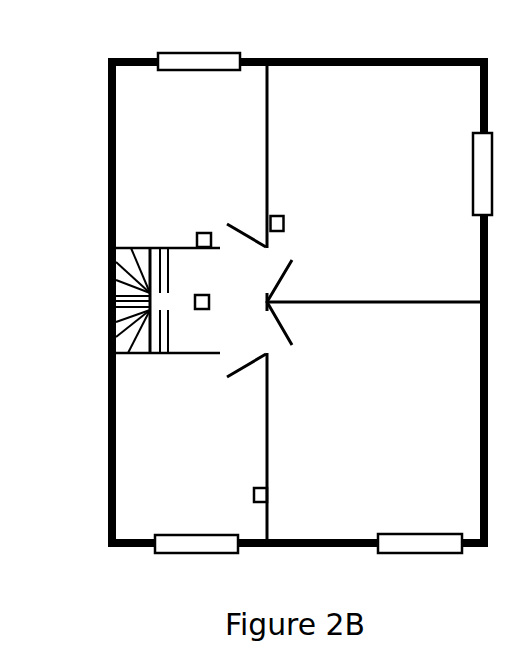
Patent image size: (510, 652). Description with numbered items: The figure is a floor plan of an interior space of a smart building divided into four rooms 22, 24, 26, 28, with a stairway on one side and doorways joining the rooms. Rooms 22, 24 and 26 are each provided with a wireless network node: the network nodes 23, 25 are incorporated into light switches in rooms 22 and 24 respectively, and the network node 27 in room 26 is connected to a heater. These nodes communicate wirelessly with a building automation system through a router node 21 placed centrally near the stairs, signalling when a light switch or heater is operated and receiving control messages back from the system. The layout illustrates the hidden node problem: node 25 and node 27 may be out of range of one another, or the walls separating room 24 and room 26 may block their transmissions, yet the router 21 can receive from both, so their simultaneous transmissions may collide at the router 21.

The router node 21 is at (190, 285).
The room 22 is at (175, 170).
The network node 23 is at (200, 220).
The room 24 is at (354, 202).
The network node 25 is at (289, 212).
The room 26 is at (175, 462).
The network node 27 is at (244, 494).
The room 28 is at (360, 438).